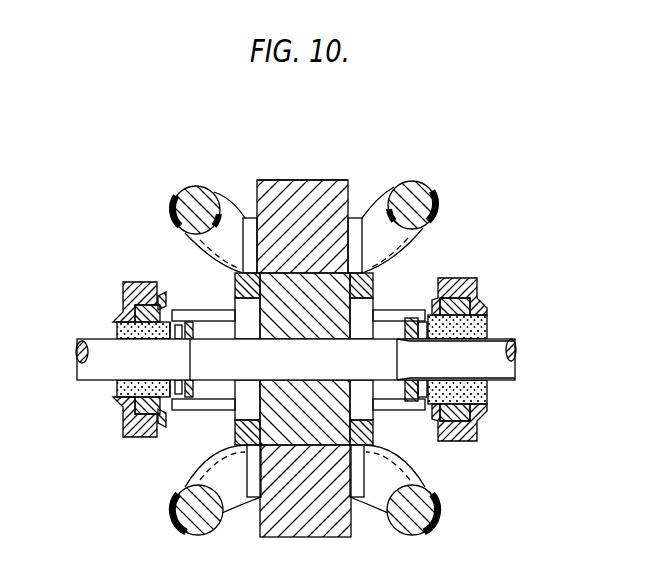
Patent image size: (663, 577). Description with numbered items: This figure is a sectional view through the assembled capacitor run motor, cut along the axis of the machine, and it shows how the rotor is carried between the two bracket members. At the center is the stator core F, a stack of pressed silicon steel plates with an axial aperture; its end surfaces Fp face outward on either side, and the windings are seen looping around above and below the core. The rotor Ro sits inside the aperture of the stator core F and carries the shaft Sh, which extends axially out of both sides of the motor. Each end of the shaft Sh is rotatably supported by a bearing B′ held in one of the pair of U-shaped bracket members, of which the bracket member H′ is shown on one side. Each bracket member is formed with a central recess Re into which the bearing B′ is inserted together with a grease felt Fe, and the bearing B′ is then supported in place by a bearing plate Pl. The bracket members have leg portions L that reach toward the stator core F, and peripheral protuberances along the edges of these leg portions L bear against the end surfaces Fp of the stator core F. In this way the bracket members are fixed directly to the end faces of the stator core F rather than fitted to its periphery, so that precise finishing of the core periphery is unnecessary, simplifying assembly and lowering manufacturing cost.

The stator core F is at (318, 537).
The end surfaces of the stator core Fp is at (258, 194).
The rotor Ro is at (384, 431).
The leg portions L is at (203, 310).
The grease felts Fe is at (138, 418).
The bearings B′ is at (117, 391).
The central recesses Re is at (117, 339).
The bearing plates Pl is at (178, 403).
The shaft Sh is at (494, 360).
The bracket member H′ is at (150, 441).